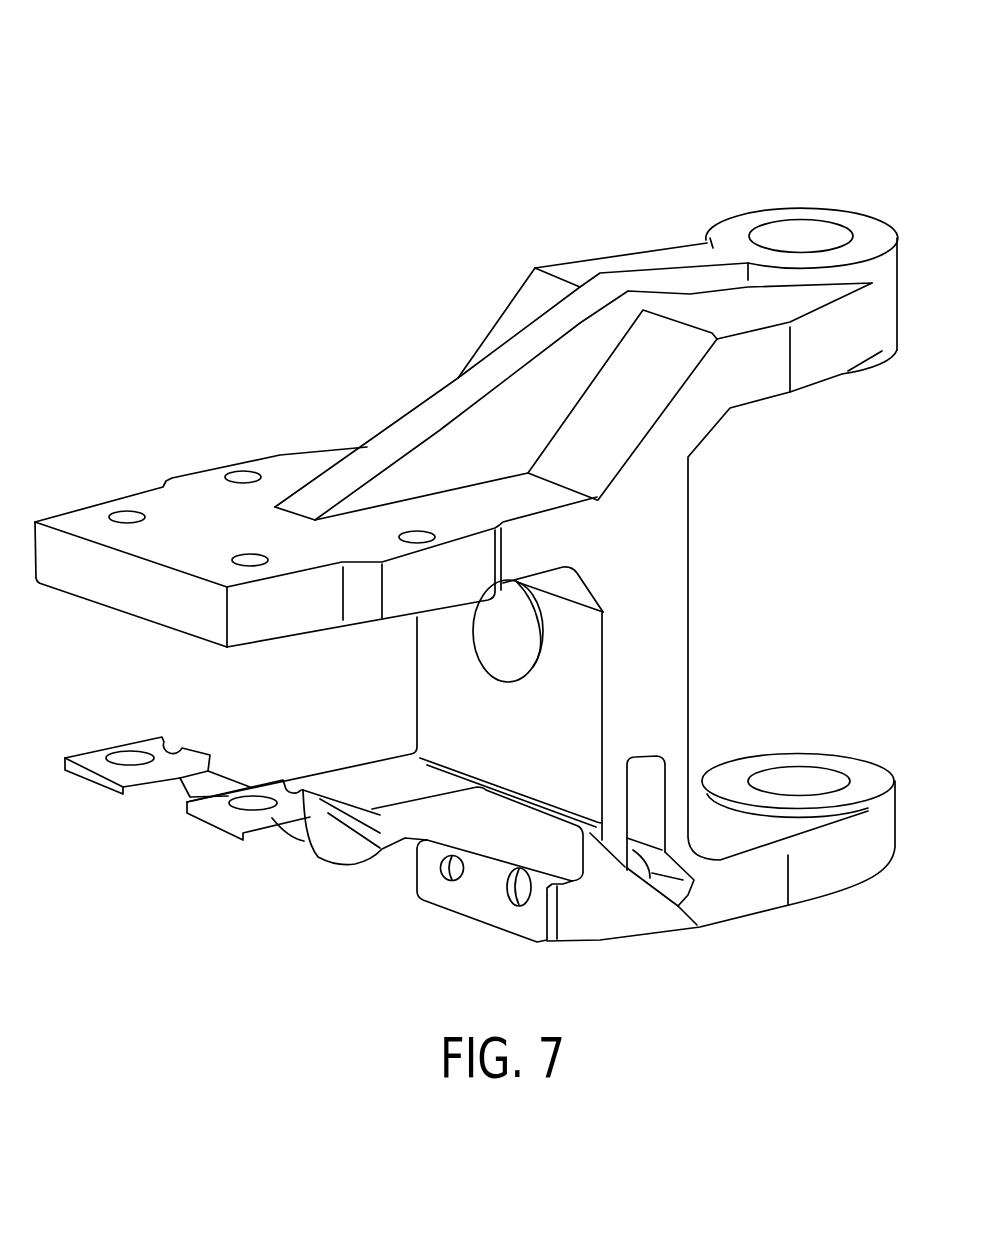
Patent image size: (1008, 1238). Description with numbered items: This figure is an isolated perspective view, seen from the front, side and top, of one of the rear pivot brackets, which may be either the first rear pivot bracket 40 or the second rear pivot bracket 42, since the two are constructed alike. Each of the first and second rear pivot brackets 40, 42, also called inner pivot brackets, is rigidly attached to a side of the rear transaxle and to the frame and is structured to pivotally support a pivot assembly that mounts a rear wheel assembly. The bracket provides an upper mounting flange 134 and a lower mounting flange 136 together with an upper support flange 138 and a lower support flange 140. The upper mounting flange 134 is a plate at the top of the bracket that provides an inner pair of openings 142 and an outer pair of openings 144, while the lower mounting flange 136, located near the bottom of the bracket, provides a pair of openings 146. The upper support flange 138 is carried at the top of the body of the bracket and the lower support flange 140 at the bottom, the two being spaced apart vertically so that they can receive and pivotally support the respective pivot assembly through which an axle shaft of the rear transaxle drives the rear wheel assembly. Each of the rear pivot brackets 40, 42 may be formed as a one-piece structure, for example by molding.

The first rear pivot bracket 40 is at (466, 516).
The second rear pivot bracket 42 is at (175, 117).
The upper mounting flange 134 is at (303, 467).
The lower mounting flange 136 is at (413, 833).
The upper support flange 138 is at (638, 260).
The lower support flange 140 is at (773, 893).
The inner pair of openings 142 is at (238, 476).
The outer pair of openings 144 is at (123, 513).
The pair of openings 146 is at (127, 758).